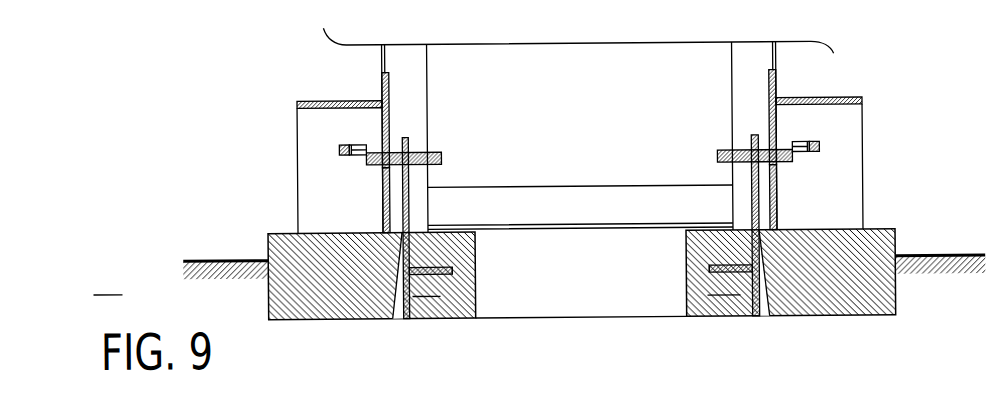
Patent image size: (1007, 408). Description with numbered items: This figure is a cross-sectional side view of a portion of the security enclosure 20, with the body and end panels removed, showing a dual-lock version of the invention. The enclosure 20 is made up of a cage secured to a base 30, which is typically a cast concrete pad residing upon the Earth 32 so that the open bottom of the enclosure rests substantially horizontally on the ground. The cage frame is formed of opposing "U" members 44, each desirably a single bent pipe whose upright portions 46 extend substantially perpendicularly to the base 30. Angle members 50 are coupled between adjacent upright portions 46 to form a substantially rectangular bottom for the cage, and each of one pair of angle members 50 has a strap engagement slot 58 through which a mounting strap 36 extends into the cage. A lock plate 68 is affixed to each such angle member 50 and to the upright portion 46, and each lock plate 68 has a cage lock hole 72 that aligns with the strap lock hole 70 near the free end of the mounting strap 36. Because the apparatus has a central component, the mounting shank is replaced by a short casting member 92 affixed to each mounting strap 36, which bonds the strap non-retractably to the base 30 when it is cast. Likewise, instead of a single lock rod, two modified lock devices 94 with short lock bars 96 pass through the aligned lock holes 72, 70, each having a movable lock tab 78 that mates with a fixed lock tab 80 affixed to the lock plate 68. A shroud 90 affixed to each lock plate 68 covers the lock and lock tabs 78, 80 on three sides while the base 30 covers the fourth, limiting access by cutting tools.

The enclosure 20 is at (107, 282).
The base 30 is at (310, 300).
The Earth 32 is at (228, 260).
The mounting strap 36 is at (410, 319).
The "U" member 44 is at (410, 60).
The upright portion 46 is at (400, 60).
The angle member 50 is at (555, 205).
The strap engagement slot 58 is at (393, 320).
The lock plate 68 is at (382, 97).
The strap lock hole 70 is at (410, 155).
The cage lock hole 72 is at (383, 168).
The lock tab 78 is at (343, 152).
The fixed lock tab 80 is at (367, 155).
The shroud 90 is at (303, 102).
The casting member 92 is at (452, 275).
The modified lock device 94 is at (440, 297).
The short lock bar 96 is at (442, 160).